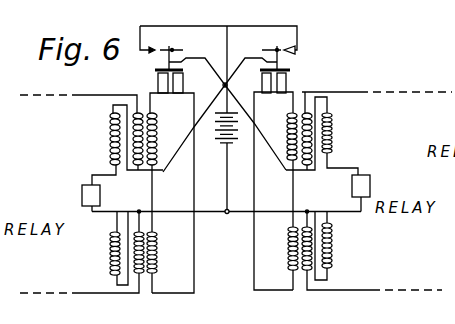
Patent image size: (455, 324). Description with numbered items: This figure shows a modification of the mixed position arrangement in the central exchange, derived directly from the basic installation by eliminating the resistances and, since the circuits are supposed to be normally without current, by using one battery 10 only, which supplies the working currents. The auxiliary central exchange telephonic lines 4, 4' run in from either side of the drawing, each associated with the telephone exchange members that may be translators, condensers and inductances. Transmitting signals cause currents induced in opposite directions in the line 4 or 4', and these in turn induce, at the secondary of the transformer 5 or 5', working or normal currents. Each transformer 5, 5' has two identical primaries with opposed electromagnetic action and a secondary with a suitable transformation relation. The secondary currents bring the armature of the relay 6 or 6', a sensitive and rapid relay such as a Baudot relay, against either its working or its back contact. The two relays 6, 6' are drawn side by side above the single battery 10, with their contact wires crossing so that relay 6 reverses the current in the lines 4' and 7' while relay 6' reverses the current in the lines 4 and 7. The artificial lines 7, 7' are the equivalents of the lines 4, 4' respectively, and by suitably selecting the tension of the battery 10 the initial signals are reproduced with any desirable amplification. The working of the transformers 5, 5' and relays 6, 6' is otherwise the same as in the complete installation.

The auxiliary central exchange telephonic line 4 is at (91, 194).
The auxiliary central exchange telephonic line 4' is at (369, 191).
The transformer 5 is at (142, 203).
The transformer 5' is at (304, 201).
The relay 6 is at (172, 169).
The relay 6' is at (273, 168).
The artificial line 7 is at (78, 199).
The artificial line 7' is at (365, 190).
The battery 10 is at (238, 147).